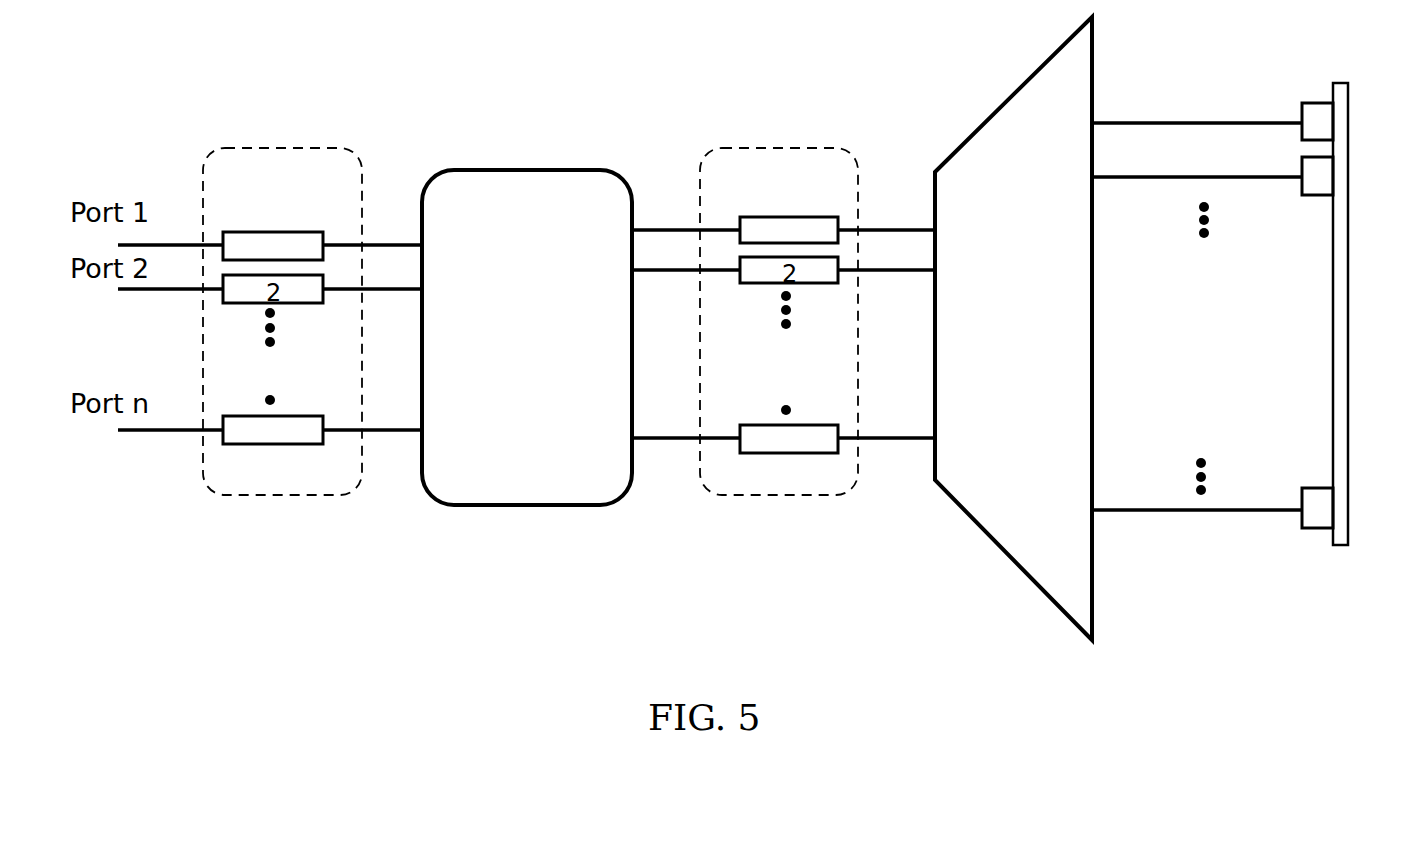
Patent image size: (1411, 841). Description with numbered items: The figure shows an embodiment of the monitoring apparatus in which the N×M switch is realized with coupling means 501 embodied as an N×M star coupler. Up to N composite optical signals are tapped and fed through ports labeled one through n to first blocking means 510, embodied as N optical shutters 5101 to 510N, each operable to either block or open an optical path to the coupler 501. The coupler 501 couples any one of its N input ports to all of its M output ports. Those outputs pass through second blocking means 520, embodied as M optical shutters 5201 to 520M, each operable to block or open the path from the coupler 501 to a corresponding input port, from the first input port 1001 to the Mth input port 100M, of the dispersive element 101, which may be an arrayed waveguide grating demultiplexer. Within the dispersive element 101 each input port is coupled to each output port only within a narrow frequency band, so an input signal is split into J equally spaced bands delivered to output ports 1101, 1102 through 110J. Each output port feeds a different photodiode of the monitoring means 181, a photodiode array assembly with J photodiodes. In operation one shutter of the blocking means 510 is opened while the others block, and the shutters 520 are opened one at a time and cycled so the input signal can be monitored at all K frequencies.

The first blocking means 510 is at (325, 148).
The first optical shutter 5101 is at (323, 245).
The Nth optical shutter 510N is at (272, 445).
The coupling means 501 is at (512, 167).
The second blocking means 520 is at (802, 143).
The first optical shutter 5201 is at (737, 217).
The Mth optical shutter 520M is at (740, 467).
The first input port 1001 is at (905, 225).
The Mth input port 100M is at (920, 447).
The dispersive element 101 is at (1022, 87).
The first output port 1101 is at (1113, 118).
The second output port 1102 is at (1095, 173).
The Jth output port 110J is at (1117, 510).
The monitoring means 181 is at (1345, 83).